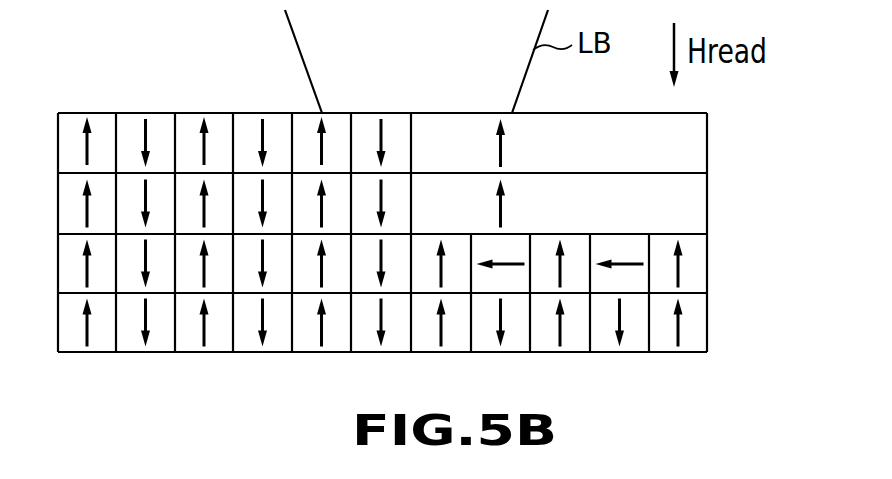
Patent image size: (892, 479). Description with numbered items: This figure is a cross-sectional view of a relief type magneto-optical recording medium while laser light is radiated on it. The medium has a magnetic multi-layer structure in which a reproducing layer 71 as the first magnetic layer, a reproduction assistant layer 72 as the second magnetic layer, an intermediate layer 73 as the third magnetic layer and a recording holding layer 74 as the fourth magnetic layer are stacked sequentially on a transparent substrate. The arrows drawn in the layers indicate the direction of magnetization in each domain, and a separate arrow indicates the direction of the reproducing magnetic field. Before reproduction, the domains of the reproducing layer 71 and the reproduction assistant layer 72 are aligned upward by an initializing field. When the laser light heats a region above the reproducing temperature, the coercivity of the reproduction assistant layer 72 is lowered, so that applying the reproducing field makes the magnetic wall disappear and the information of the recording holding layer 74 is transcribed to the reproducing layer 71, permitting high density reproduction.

The reproducing layer 71 is at (695, 152).
The reproduction assistant layer 72 is at (695, 210).
The intermediate layer 73 is at (695, 270).
The recording holding layer 74 is at (695, 330).